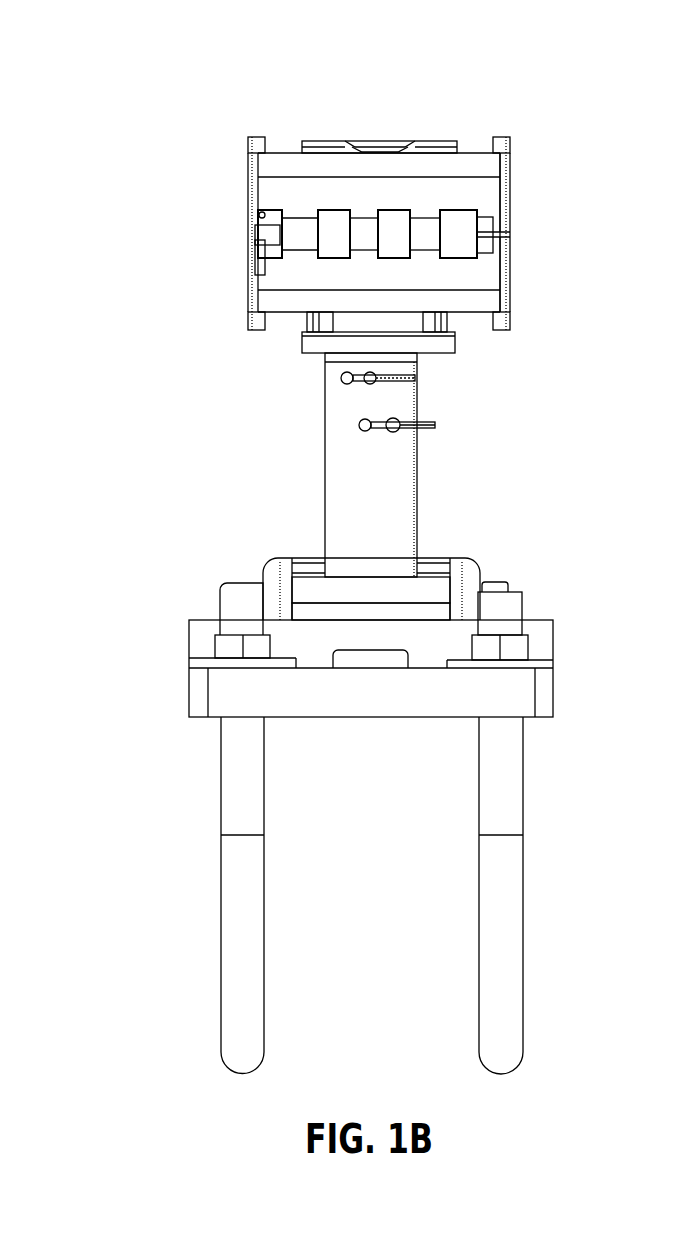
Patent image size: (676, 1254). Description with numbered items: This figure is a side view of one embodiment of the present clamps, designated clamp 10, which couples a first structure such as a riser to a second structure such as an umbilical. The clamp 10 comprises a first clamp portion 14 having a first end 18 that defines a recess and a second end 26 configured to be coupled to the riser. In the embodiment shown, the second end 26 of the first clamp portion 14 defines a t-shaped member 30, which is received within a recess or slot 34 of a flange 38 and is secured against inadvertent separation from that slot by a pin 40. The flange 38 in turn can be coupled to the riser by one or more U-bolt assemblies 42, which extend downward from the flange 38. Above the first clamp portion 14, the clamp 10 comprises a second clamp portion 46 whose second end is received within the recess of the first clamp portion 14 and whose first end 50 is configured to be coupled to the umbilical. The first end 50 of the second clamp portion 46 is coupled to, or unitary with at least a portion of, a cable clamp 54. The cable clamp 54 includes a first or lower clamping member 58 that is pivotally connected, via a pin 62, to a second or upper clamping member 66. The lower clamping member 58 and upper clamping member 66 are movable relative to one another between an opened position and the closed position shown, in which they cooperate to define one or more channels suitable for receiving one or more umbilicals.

The clamp 10 is at (146, 40).
The first clamp portion 14 is at (375, 458).
The first end 18 is at (430, 376).
The second end 26 is at (433, 542).
The t-shaped member 30 is at (370, 608).
The recess or slot 34 is at (288, 593).
The flange 38 is at (205, 640).
The pin 40 is at (323, 593).
The U-bolt assemblies 42 is at (195, 899).
The second clamp portion 46 is at (317, 335).
The first end 50 is at (536, 285).
The cable clamp 54 is at (433, 126).
The first or lower clamping member 58 is at (280, 290).
The pin 62 is at (267, 232).
The second or upper clamping member 66 is at (280, 195).